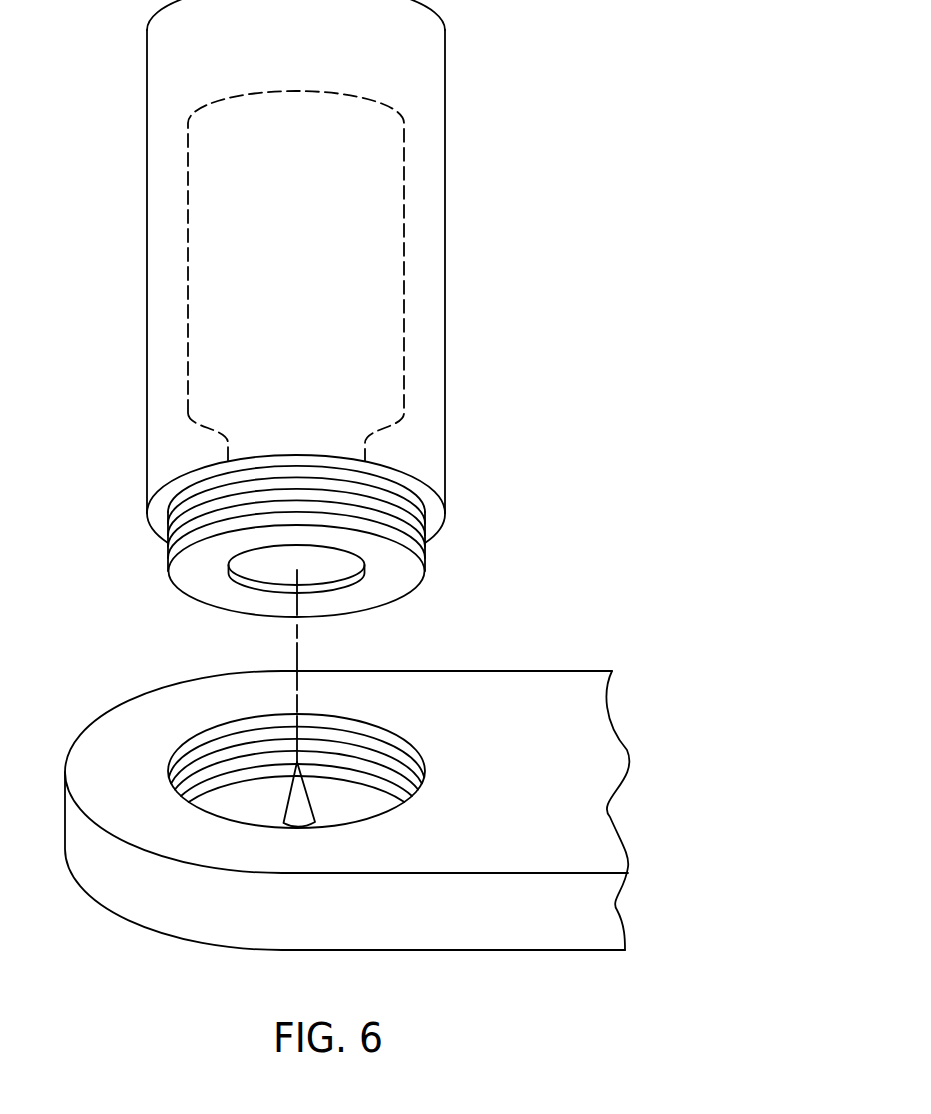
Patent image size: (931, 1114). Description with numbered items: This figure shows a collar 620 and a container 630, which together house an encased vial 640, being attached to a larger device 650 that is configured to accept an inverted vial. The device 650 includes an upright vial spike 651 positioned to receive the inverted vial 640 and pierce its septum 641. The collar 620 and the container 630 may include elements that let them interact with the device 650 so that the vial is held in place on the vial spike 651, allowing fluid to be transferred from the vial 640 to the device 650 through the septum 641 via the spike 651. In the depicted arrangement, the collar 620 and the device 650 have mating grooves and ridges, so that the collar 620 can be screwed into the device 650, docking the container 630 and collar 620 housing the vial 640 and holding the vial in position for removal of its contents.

The container 630 is at (430, 248).
The collar 620 is at (423, 538).
The septum 641 is at (263, 568).
The vial 640 is at (322, 627).
The device 650 is at (533, 693).
The vial spike 651 is at (297, 795).